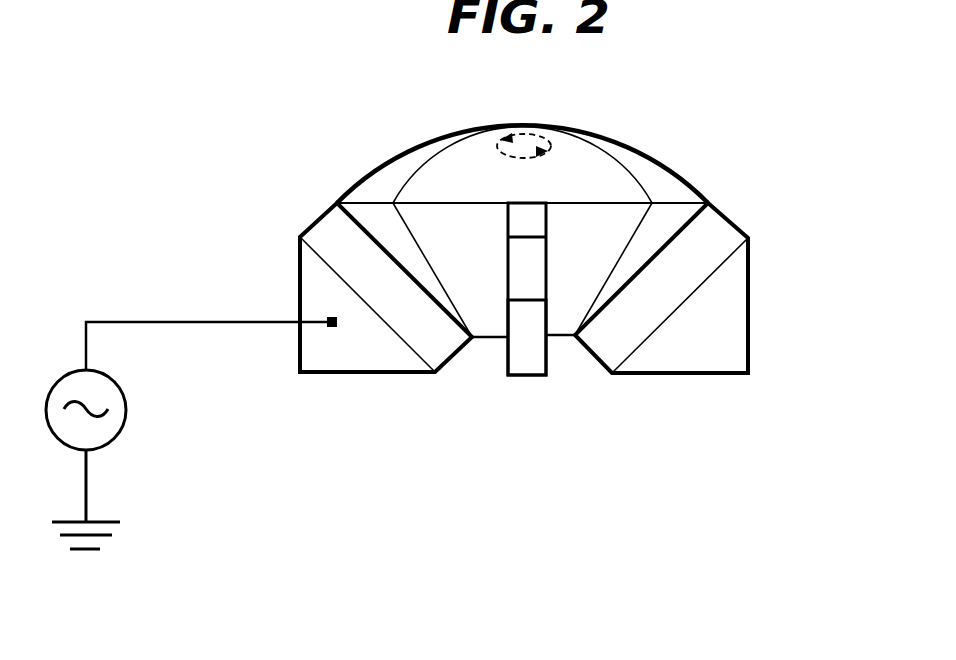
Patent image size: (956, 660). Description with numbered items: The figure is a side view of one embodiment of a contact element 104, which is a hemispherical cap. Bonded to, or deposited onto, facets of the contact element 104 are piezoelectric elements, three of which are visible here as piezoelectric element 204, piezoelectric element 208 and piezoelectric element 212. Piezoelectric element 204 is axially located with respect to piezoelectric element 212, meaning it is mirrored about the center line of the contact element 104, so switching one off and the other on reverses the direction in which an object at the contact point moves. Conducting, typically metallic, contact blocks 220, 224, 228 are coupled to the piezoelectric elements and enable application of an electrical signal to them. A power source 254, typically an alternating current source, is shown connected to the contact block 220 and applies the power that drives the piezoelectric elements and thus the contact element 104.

The contact element 104 is at (653, 153).
The piezoelectric element 204 is at (328, 211).
The piezoelectric element 208 is at (532, 218).
The piezoelectric element 212 is at (723, 222).
The contact block 220 is at (306, 289).
The contact block 224 is at (527, 352).
The contact block 228 is at (750, 332).
The power source 254 is at (115, 438).